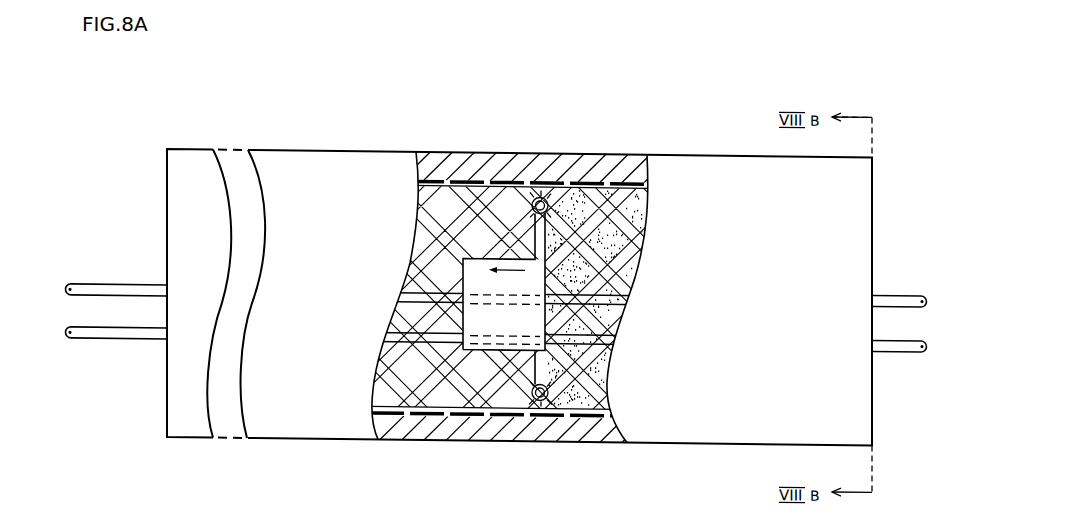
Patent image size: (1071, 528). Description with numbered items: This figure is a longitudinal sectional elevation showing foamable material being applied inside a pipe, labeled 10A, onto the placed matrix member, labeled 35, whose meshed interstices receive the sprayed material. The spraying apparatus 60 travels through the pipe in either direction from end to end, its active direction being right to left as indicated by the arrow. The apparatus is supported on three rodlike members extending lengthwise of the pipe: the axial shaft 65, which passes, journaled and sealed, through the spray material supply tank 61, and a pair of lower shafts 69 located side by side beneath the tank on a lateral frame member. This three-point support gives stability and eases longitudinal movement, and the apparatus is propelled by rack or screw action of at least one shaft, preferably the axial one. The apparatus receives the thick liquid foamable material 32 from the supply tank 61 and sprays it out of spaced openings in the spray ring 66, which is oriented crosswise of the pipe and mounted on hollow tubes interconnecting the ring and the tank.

The cable assembly 10A is at (657, 147).
The outer jacket 35 is at (488, 147).
The spray ring 66 is at (538, 176).
The spraying apparatus 60 is at (458, 271).
The spray material supply tank 61 is at (507, 325).
The foamable material 32 is at (622, 288).
The axial shaft 65 is at (108, 282).
The lower shaft 69 is at (110, 338).